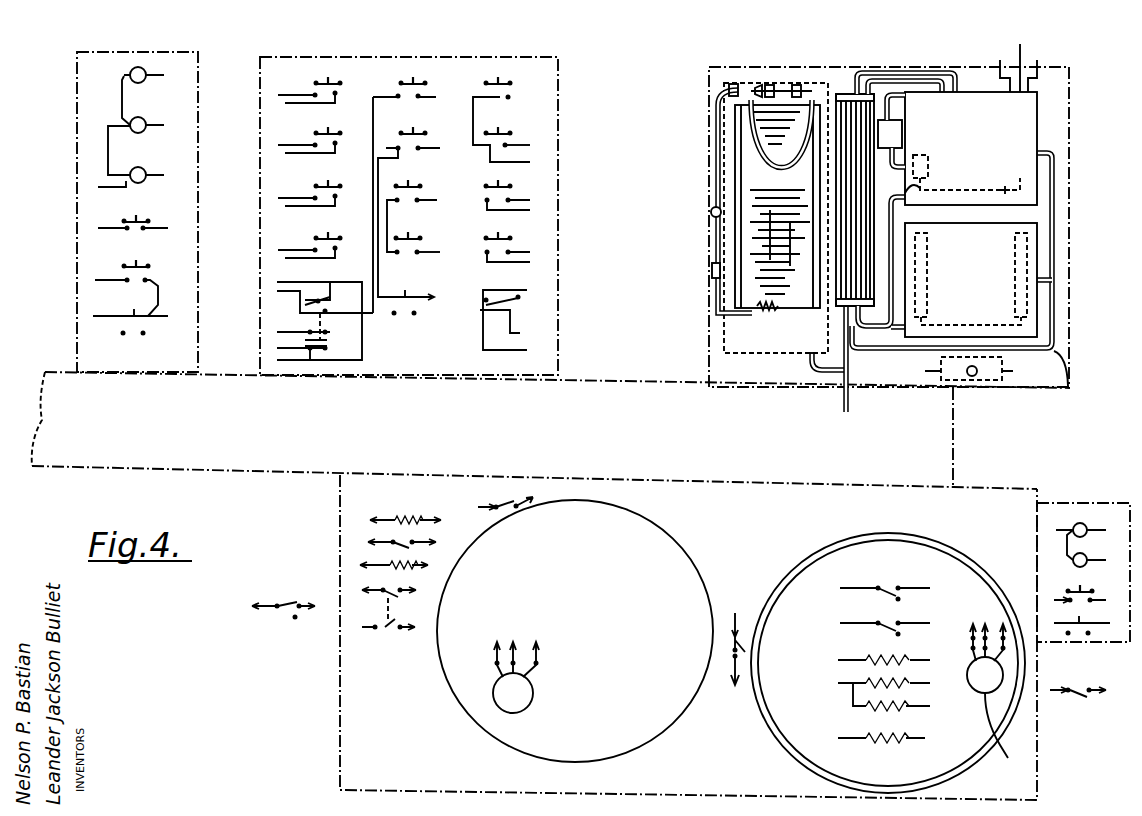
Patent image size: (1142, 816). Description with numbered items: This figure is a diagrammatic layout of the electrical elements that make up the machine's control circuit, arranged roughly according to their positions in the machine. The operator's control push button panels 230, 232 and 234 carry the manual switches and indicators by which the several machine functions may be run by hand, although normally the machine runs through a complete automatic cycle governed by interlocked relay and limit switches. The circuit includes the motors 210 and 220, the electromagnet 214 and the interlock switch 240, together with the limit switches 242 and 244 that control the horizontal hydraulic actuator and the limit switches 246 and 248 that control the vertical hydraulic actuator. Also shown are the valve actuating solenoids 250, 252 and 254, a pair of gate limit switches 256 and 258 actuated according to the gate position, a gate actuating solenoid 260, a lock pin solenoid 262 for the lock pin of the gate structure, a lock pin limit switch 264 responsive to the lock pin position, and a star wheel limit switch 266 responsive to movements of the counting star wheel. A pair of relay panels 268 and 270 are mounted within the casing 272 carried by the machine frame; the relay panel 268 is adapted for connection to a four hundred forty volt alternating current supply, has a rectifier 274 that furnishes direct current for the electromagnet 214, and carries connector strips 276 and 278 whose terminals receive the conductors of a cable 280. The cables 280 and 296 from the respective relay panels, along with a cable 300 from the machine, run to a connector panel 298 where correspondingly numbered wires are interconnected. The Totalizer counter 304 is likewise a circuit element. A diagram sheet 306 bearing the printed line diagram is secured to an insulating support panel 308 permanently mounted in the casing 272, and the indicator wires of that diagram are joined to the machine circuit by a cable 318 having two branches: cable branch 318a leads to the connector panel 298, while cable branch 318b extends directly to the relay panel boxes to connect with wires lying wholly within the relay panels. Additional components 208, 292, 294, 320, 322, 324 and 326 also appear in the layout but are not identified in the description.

The motor control circuit 208 is at (650, 746).
The motor 210 is at (500, 708).
The electromagnet 214 is at (885, 745).
The motor 220 is at (990, 722).
The operator's control push button panel 230 is at (77, 113).
The operator's control push button panel 232 is at (550, 81).
The operator's control push button panel 234 is at (1086, 496).
The interlock switch 240 is at (737, 580).
The limit switch 242 is at (283, 612).
The limit switch 244 is at (1078, 706).
The limit switch 246 is at (873, 565).
The limit switch 248 is at (905, 618).
The valve actuating solenoid 250 is at (865, 652).
The valve actuating solenoid 252 is at (866, 672).
The valve actuating solenoid 254 is at (852, 710).
The gate limit switch 256 is at (388, 634).
The gate limit switch 258 is at (405, 595).
The gate actuating solenoid 260 is at (420, 572).
The lock pin solenoid 262 is at (420, 502).
The lock pin limit switch 264 is at (360, 552).
The star wheel limit switch 266 is at (508, 494).
The relay panel 268 is at (1015, 117).
The relay panel 270 is at (1032, 230).
The casing 272 is at (1058, 303).
The rectifier 274 is at (894, 136).
The connector strip 276 is at (930, 168).
The connector strip 278 is at (1005, 187).
The cable 280 is at (891, 216).
The heating element 292 is at (929, 245).
The heating element 294 is at (1015, 298).
The cable 296 is at (880, 350).
The connector panel 298 is at (856, 93).
The cable 300 is at (843, 400).
The Totalizer counter 304 is at (982, 380).
The diagram sheet 306 is at (745, 240).
The support panel 308 is at (722, 332).
The cable 318 is at (810, 368).
The cable branch 318a is at (838, 343).
The cable branch 318b is at (1075, 385).
The coil 320 is at (755, 137).
The valve 322 is at (710, 270).
The gauge 324 is at (710, 212).
The fitting 326 is at (782, 88).